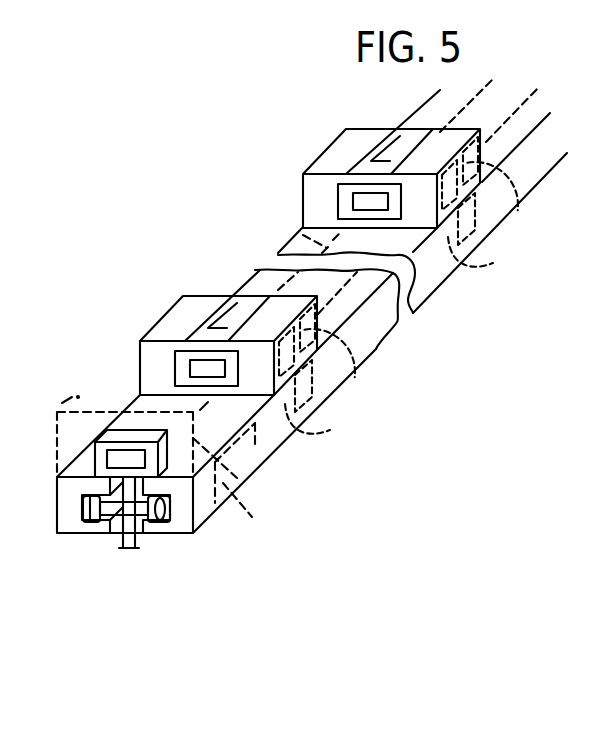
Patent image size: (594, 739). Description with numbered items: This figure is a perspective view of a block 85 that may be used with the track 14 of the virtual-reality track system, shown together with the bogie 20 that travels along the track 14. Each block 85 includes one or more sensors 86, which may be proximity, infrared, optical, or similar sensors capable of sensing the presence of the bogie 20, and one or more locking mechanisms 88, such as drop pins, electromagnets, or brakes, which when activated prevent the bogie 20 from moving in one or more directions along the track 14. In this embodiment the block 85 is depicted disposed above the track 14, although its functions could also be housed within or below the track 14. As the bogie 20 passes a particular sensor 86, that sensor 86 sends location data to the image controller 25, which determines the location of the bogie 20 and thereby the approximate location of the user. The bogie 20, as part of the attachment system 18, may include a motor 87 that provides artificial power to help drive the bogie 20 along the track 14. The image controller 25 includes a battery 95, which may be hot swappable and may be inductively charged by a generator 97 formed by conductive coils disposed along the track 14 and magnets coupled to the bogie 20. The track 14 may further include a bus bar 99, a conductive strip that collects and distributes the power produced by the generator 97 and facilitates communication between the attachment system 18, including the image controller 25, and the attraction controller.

The track 14 is at (533, 190).
The attachment system 18 is at (118, 537).
The bogie 20 is at (93, 507).
The image controller 25 is at (237, 368).
The block 85 is at (164, 315).
The sensors 86 is at (355, 378).
The motor 87 is at (138, 520).
The locking mechanisms 88 is at (260, 300).
The battery 95 is at (177, 361).
The generator 97 is at (257, 443).
The bus bar 99 is at (293, 231).